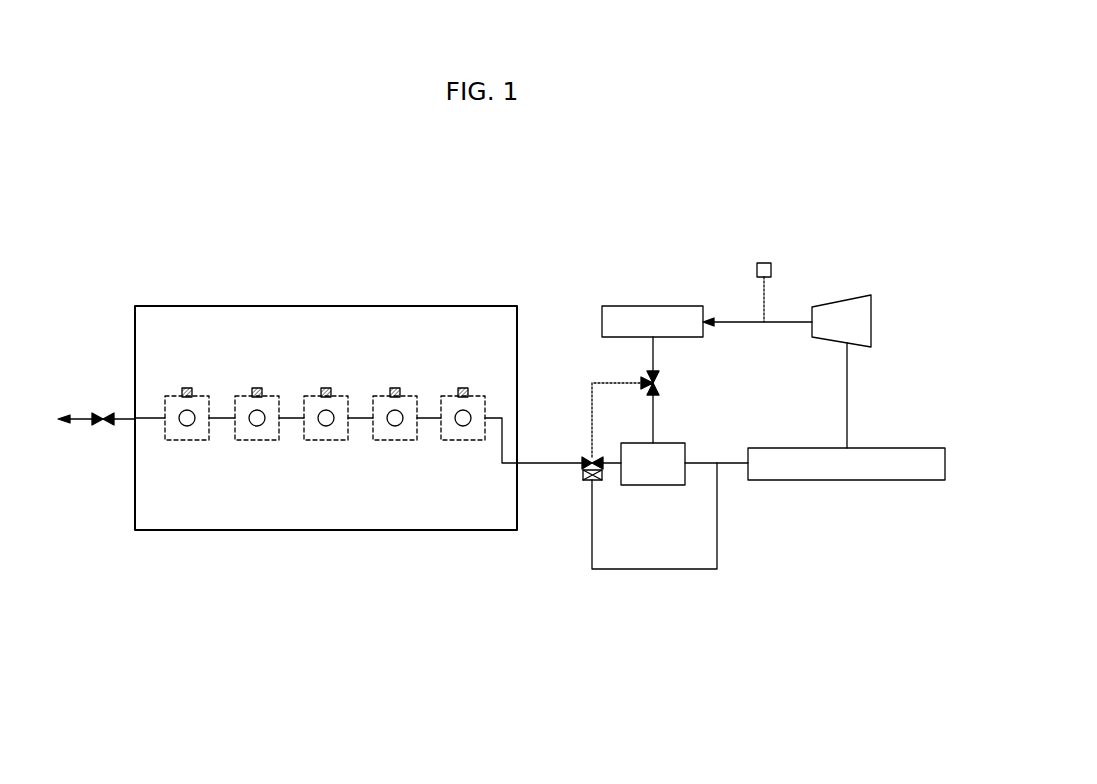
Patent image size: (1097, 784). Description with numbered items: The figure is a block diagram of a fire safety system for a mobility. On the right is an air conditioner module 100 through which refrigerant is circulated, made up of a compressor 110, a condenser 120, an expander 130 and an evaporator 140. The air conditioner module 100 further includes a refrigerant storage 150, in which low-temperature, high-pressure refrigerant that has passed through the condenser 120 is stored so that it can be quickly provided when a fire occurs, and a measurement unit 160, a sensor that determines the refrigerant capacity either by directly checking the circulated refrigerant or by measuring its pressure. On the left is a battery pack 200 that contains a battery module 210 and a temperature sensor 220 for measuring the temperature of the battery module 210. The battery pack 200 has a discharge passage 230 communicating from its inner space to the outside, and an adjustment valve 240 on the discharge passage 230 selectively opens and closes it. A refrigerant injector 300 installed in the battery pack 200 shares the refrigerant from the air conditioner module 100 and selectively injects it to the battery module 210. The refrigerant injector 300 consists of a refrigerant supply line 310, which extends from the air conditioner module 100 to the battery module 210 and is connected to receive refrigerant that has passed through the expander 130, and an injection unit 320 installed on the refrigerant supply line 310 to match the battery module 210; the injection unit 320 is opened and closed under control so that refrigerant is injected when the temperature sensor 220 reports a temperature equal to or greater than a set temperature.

The air conditioner module 100 is at (851, 394).
The compressor 110 is at (840, 305).
The condenser 120 is at (650, 312).
The expander 130 is at (581, 482).
The evaporator 140 is at (841, 481).
The refrigerant storage 150 is at (652, 476).
The measurement unit 160 is at (764, 262).
The battery pack 200 is at (326, 302).
The battery module 210 is at (187, 440).
The temperature sensor 220 is at (187, 388).
The discharge passage 230 is at (82, 426).
The adjustment valve 240 is at (100, 412).
The refrigerant injector 300 is at (492, 643).
The refrigerant supply line 310 is at (534, 463).
The injection unit 320 is at (395, 426).